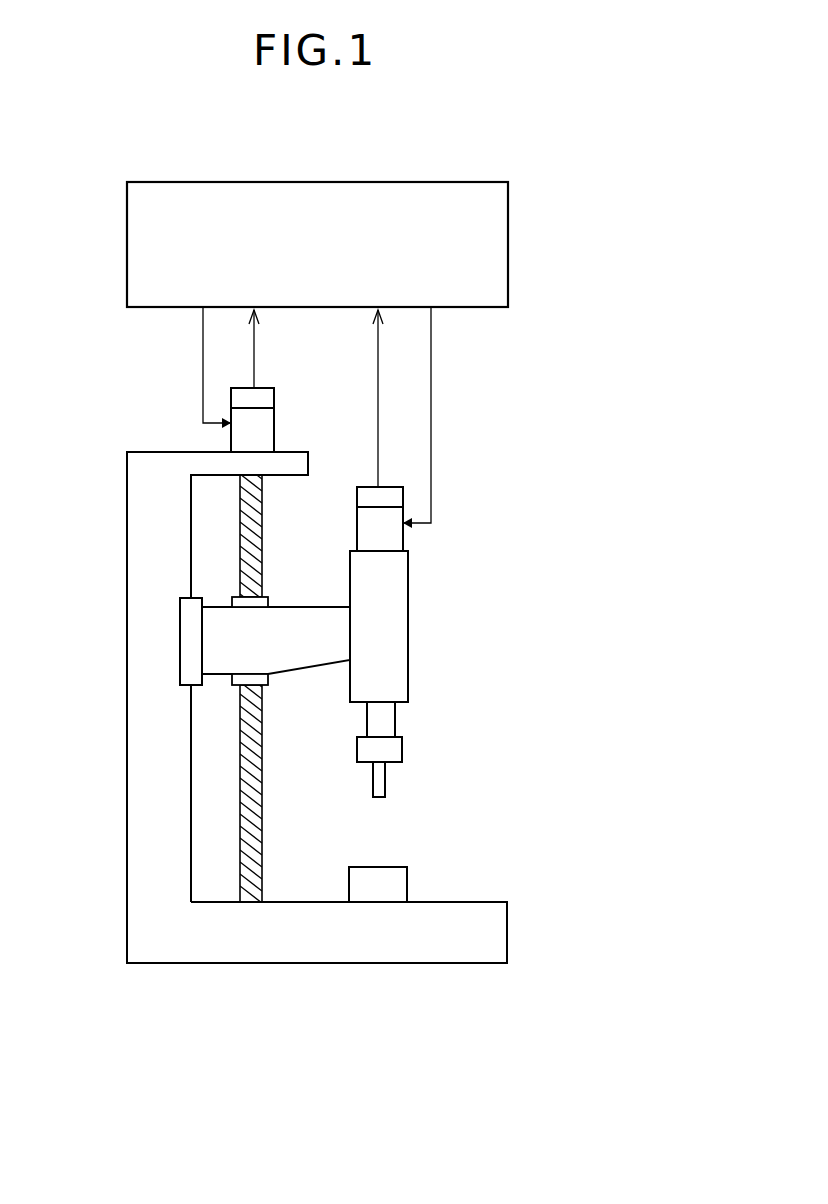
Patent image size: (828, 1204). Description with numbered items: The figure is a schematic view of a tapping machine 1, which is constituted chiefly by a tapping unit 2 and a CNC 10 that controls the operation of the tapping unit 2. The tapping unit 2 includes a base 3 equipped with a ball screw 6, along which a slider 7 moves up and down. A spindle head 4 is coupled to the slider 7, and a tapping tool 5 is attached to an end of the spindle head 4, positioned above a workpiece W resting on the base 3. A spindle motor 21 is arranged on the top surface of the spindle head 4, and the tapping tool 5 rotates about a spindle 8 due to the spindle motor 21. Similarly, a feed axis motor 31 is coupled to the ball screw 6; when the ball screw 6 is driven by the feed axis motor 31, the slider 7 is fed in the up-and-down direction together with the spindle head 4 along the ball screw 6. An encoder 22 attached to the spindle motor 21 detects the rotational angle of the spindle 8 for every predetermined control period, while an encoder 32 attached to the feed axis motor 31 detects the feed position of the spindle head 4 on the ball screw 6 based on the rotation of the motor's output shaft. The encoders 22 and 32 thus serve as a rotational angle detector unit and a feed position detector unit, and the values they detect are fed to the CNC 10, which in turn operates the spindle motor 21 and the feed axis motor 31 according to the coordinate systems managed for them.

The tapping machine 1 is at (558, 365).
The tapping unit 2 is at (426, 642).
The base 3 is at (441, 945).
The spindle head 4 is at (393, 644).
The tapping tool 5 is at (380, 784).
The ball screw 6 is at (263, 838).
The slider 7 is at (188, 638).
The spindle 8 is at (384, 721).
The CNC 10 is at (456, 182).
The spindle motor 21 is at (370, 530).
The encoder 22 is at (370, 493).
The feed axis motor 31 is at (265, 428).
The encoder 32 is at (265, 398).
The workpiece W is at (407, 884).